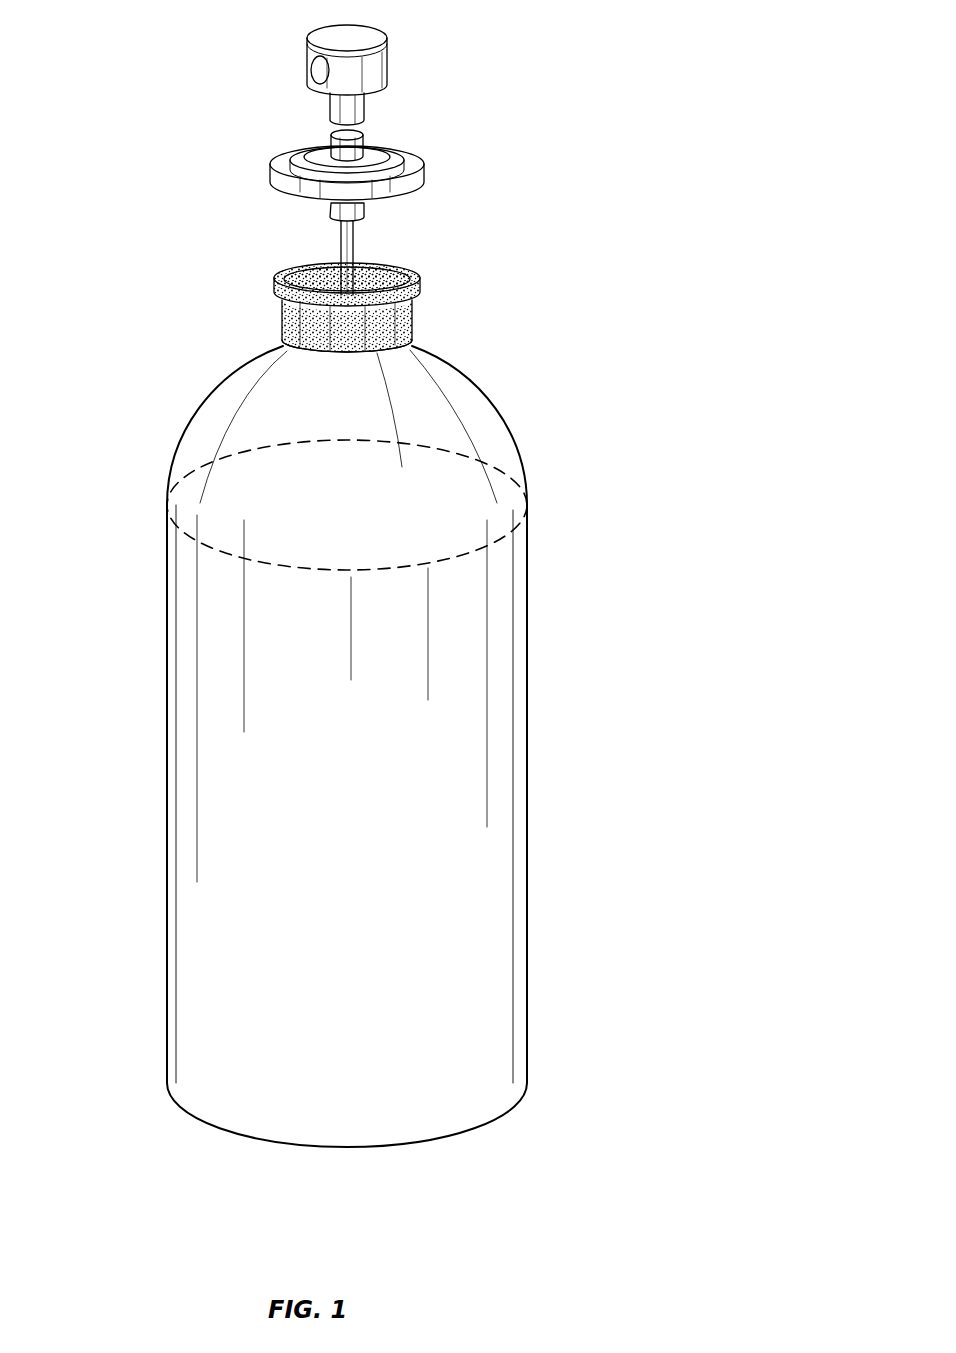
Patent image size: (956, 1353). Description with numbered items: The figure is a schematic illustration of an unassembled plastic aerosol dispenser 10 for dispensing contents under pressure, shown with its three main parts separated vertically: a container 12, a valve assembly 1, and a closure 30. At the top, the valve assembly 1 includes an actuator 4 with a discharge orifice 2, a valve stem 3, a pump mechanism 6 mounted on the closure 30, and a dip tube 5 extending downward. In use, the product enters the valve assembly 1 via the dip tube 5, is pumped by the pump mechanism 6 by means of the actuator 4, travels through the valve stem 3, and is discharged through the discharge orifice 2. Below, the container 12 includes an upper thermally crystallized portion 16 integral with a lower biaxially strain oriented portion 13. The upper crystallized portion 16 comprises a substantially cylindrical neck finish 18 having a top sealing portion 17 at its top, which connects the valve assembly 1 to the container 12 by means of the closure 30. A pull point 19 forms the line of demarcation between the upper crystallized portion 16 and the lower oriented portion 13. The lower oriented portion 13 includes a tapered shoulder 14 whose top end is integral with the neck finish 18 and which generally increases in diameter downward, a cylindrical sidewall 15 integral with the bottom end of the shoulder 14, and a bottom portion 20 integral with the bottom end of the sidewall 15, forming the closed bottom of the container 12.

The valve assembly 1 is at (200, 97).
The plastic aerosol dispenser 10 is at (565, 75).
The discharge orifice 2 is at (313, 62).
The valve stem 3 is at (366, 113).
The actuator 4 is at (387, 47).
The dip tube 5 is at (354, 251).
The pump mechanism 6 is at (305, 158).
The closure 30 is at (424, 171).
The upper thermally crystallized portion 16 is at (344, 307).
The top sealing portion 17 is at (421, 286).
The neck finish 18 is at (413, 320).
The pull point 19 is at (413, 341).
The lower biaxially strain oriented portion 13 is at (360, 771).
The tapered shoulder 14 is at (497, 417).
The container 12 is at (533, 716).
The cylindrical sidewall 15 is at (529, 863).
The bottom portion 20 is at (365, 1141).